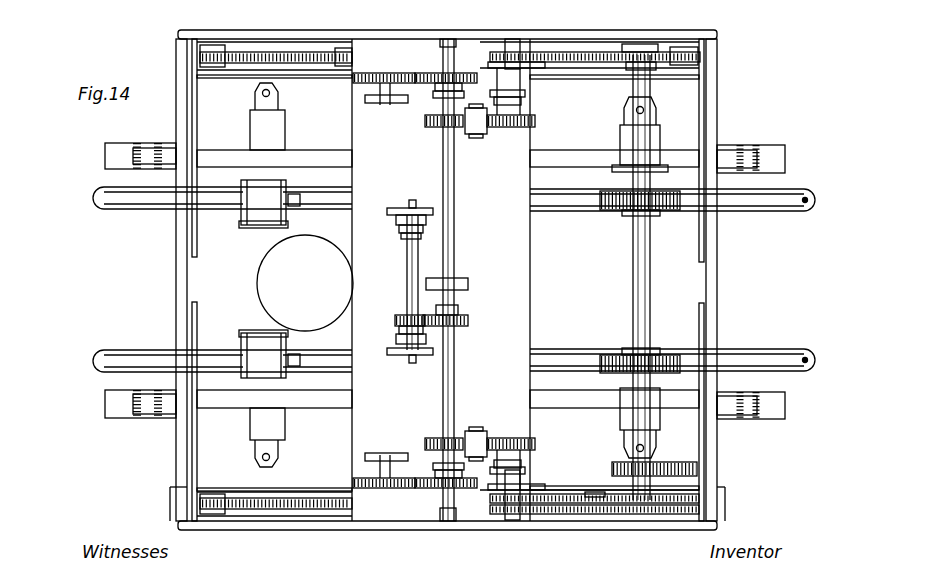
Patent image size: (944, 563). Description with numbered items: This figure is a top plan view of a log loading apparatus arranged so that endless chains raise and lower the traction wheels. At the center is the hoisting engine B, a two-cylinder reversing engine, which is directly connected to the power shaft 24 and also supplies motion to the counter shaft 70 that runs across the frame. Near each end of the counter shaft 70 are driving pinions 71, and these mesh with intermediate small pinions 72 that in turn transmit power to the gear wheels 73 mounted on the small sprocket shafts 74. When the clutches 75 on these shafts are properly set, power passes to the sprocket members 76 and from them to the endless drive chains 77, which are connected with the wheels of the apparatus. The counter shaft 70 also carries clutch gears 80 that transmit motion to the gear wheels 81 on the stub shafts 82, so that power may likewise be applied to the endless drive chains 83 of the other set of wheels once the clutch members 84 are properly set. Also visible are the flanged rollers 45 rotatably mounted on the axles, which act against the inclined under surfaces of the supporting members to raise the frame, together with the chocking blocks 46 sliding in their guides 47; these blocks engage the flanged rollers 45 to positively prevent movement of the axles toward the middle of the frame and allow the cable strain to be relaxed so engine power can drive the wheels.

The hoisting engine B is at (305, 279).
The power shaft 24 is at (424, 258).
The flanged rollers 45 is at (612, 170).
The chocking blocks 46 is at (280, 108).
The guides 47 is at (278, 138).
The counter shaft 70 is at (455, 240).
The driving pinions 71 is at (430, 128).
The intermediate small pinions 72 is at (478, 135).
The gear wheels 73 is at (513, 128).
The small sprocket shafts 74 is at (512, 45).
The clutches 75 is at (524, 92).
The sprocket members 76 is at (520, 58).
The endless drive chains 77 is at (598, 52).
The clutch gears 80 is at (445, 40).
The gear wheels 81 is at (362, 84).
The stub shafts 82 is at (385, 104).
The endless drive chains 83 is at (287, 55).
The clutch members 84 is at (433, 95).